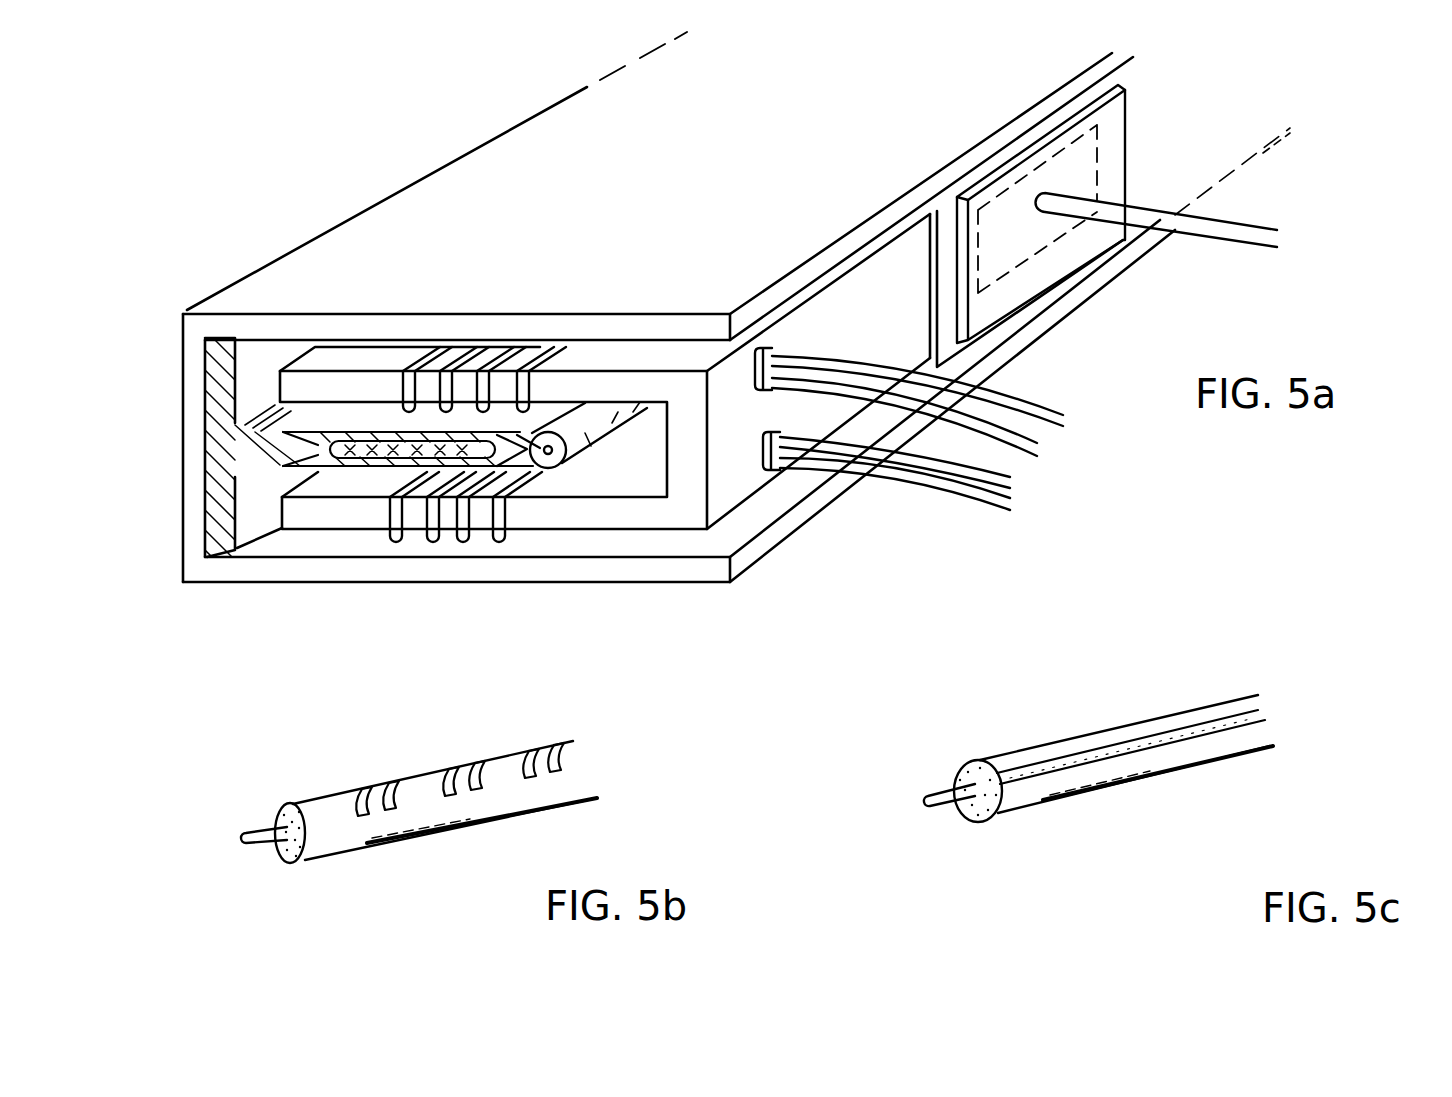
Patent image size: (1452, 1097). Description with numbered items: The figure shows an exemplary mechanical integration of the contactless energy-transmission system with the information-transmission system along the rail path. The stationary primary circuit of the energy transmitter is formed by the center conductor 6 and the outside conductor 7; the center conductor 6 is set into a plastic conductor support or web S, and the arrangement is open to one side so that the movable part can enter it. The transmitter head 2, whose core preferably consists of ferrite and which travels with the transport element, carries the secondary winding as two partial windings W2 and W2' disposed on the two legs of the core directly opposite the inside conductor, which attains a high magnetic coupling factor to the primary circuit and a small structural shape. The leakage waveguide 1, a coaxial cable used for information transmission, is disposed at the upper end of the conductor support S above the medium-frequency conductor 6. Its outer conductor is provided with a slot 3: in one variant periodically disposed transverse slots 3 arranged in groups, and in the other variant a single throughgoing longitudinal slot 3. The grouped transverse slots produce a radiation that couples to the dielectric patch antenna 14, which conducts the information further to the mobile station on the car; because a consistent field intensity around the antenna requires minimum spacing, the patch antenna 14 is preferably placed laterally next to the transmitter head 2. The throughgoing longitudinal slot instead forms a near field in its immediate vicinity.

In FIG. 5A, the leakage waveguide 1 is at (583, 455).
In FIG. 5B, the leakage waveguide 1 is at (447, 815).
In FIG. 5C, the leakage waveguide 1 is at (1245, 733).
In FIG. 5A, the transmitter head 2 is at (747, 486).
In FIG. 5B, the slot 3 is at (376, 785).
In FIG. 5C, the slot 3 is at (1183, 730).
In FIG. 5A, the center conductor 6 is at (386, 458).
In FIG. 5A, the outside conductor 7 is at (559, 166).
In FIG. 5A, the patch antenna 14 is at (1042, 232).
In FIG. 5A, the conductor support S is at (214, 486).
In FIG. 5A, the secondary winding W2 is at (703, 313).
In FIG. 5A, the secondary partial winding W2' is at (746, 562).